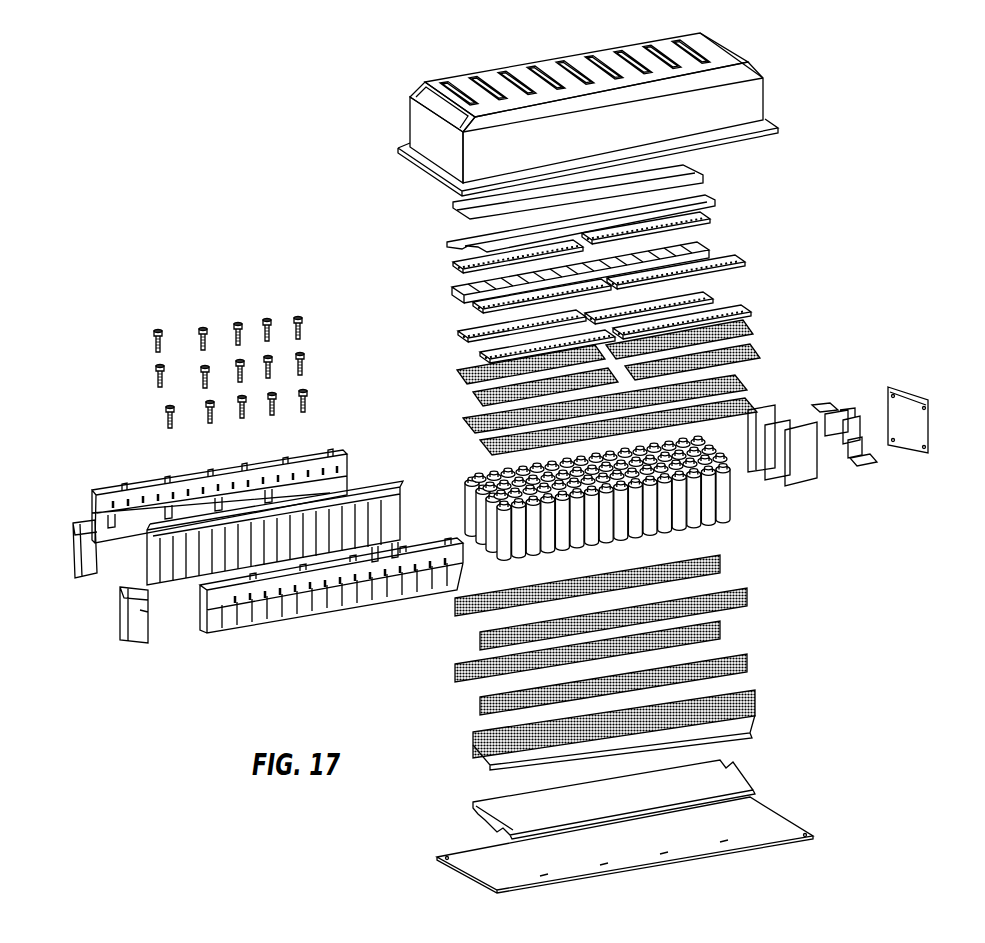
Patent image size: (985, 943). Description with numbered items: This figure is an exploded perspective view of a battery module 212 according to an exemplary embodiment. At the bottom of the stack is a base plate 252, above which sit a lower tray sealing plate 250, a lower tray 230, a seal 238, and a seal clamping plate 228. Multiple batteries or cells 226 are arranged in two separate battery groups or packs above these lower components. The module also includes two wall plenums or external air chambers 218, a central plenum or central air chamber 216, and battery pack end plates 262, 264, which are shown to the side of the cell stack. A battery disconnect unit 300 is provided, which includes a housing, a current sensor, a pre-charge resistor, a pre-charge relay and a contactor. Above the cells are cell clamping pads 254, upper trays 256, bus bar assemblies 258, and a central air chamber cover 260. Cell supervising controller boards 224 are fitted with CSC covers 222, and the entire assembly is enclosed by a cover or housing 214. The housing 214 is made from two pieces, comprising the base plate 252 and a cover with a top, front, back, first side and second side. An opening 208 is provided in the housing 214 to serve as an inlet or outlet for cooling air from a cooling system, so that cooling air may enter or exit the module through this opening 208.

The opening 208 is at (424, 97).
The battery module 212 is at (856, 135).
The housing 214 is at (755, 74).
The central plenum 216 is at (400, 492).
The wall plenum 218 is at (150, 485).
The CSC cover 222 is at (704, 192).
The cell supervising controller board 224 is at (723, 257).
The cells 226 is at (733, 516).
The seal clamping plate 228 is at (740, 595).
The lower tray 230 is at (745, 709).
The seal 238 is at (742, 660).
The lower tray sealing plate 250 is at (745, 776).
The base plate 252 is at (765, 826).
The cell clamping pads 254 is at (745, 407).
The upper trays 256 is at (750, 353).
The bus bar assemblies 258 is at (470, 353).
The central air chamber cover 260 is at (455, 297).
The battery pack end plate 262 is at (125, 632).
The battery pack end plate 264 is at (83, 570).
The battery disconnect unit 300 is at (882, 481).